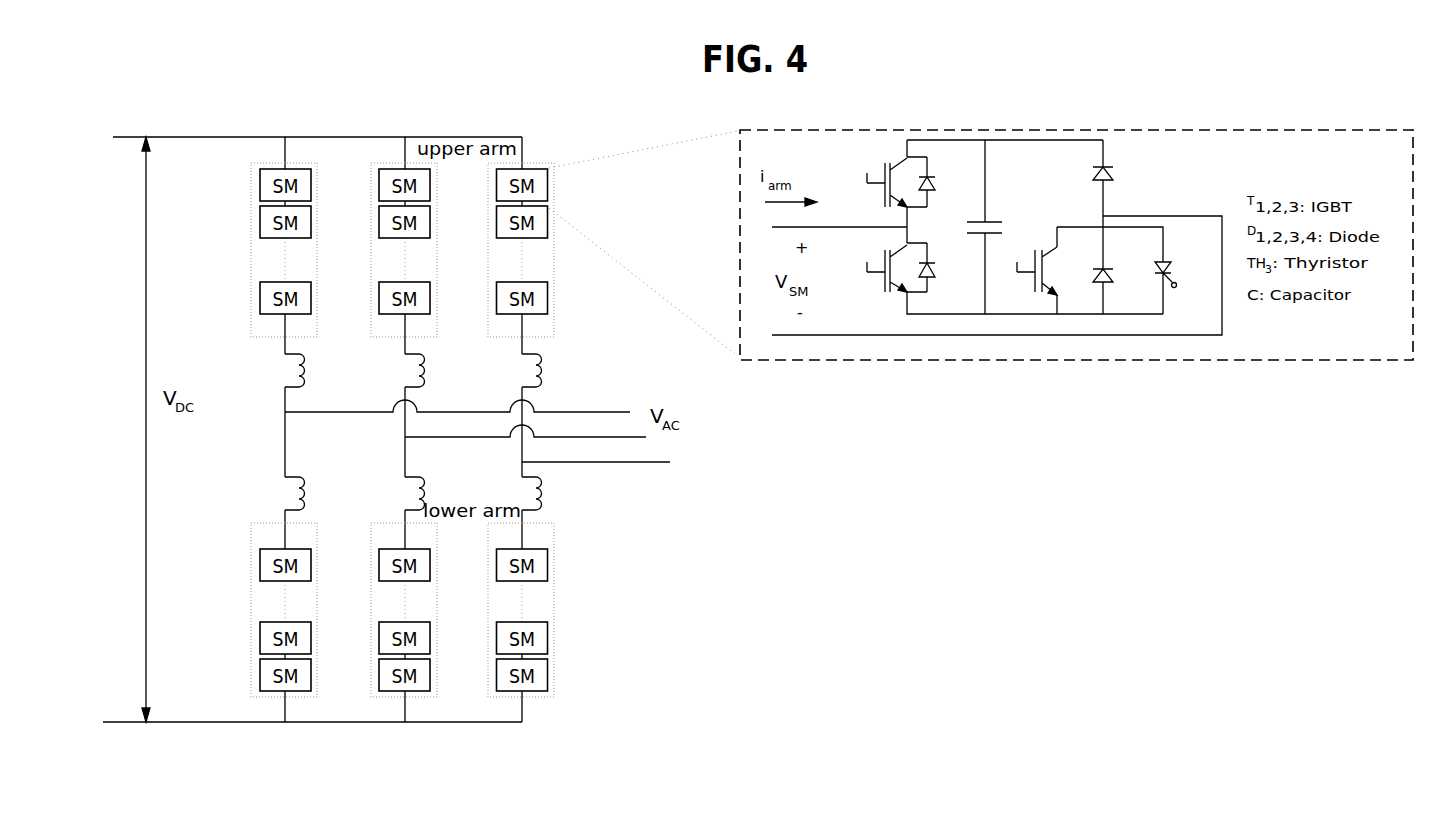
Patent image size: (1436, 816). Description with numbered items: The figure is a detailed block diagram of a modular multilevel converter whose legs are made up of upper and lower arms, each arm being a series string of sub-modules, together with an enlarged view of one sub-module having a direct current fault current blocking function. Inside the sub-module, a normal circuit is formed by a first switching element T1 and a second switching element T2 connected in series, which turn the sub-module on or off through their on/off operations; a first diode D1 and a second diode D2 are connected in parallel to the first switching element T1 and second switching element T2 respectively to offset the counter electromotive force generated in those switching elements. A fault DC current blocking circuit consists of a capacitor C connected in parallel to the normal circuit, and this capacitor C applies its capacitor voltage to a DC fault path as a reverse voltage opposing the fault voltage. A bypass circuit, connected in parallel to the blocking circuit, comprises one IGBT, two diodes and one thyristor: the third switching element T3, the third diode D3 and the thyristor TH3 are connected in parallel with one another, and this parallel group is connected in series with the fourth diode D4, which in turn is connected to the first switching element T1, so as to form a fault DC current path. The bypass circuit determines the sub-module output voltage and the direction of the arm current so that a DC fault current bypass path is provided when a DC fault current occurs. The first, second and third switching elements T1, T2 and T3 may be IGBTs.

The first switching element T1 is at (878, 182).
The second switching element T2 is at (878, 268).
The third switching element T3 is at (1051, 269).
The first diode D1 is at (941, 182).
The second diode D2 is at (941, 267).
The third diode D3 is at (1112, 263).
The fourth diode D4 is at (1120, 178).
The thyristor TH3 is at (1178, 279).
The capacitor C is at (993, 227).